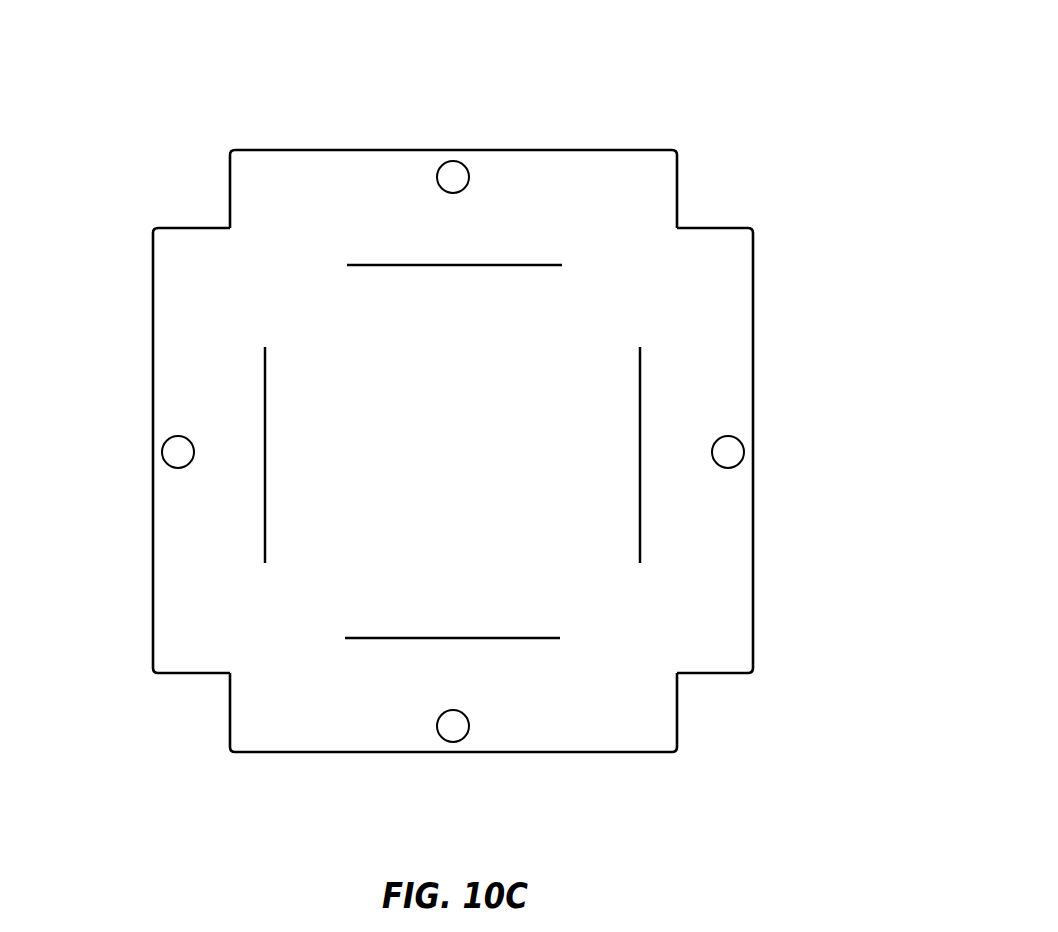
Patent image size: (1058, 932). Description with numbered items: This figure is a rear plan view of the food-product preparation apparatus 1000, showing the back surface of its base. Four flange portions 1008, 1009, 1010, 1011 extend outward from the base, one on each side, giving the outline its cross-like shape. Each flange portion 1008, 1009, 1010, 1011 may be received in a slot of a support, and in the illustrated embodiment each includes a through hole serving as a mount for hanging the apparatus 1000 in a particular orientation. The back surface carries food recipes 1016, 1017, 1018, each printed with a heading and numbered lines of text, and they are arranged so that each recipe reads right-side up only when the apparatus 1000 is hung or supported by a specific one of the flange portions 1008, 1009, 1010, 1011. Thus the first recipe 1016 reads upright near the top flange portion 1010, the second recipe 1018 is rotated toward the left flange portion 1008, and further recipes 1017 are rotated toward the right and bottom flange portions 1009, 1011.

The food-product preparation apparatus 1000 is at (476, 415).
The flange portion 1010 is at (567, 150).
The flange portion 1009 is at (753, 323).
The flange portion 1011 is at (580, 752).
The flange portion 1008 is at (153, 383).
The food recipe 1016 is at (386, 207).
The food recipe 1018 is at (212, 336).
The food recipe 1017 is at (697, 399).